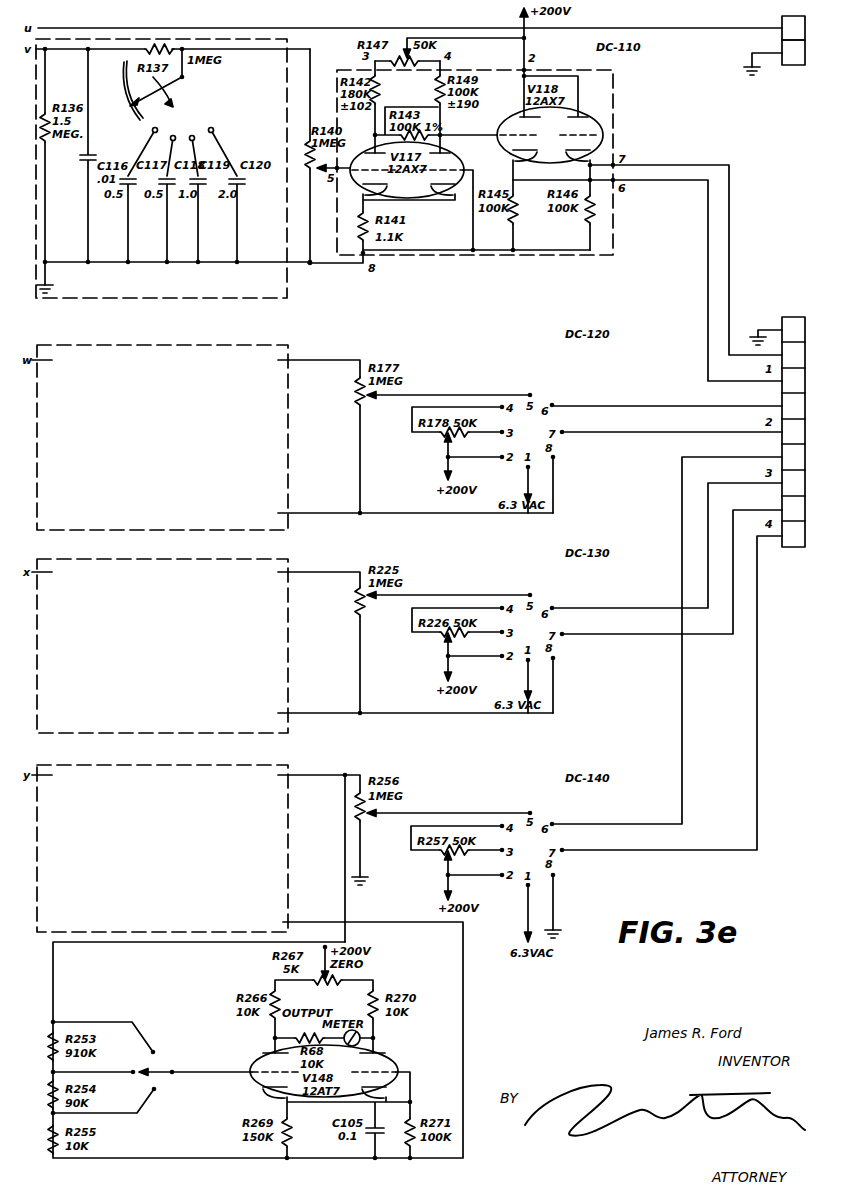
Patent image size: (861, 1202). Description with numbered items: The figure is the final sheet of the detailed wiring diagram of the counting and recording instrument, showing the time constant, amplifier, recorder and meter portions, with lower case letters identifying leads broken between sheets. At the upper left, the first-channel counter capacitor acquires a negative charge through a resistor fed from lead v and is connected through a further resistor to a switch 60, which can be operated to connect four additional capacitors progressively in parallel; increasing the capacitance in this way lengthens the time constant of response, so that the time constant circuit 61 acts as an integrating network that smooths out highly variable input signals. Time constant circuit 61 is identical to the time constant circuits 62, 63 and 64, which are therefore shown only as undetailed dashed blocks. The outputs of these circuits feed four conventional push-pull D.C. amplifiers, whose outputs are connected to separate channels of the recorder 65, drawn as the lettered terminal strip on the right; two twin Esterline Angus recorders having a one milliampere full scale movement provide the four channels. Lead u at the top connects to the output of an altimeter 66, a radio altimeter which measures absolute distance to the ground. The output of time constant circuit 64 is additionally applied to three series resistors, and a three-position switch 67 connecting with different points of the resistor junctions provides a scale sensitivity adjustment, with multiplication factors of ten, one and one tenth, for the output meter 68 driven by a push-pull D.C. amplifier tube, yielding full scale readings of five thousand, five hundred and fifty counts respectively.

The switch 60 is at (184, 112).
The time constant circuit 61 is at (161, 168).
The time constant circuit 62 is at (162, 437).
The time constant circuit 63 is at (162, 646).
The time constant circuit 64 is at (162, 848).
The recorder 65 is at (791, 446).
The altimeter 66 is at (774, 54).
The three-position switch 67 is at (151, 1068).
The output meter 68 is at (346, 1023).